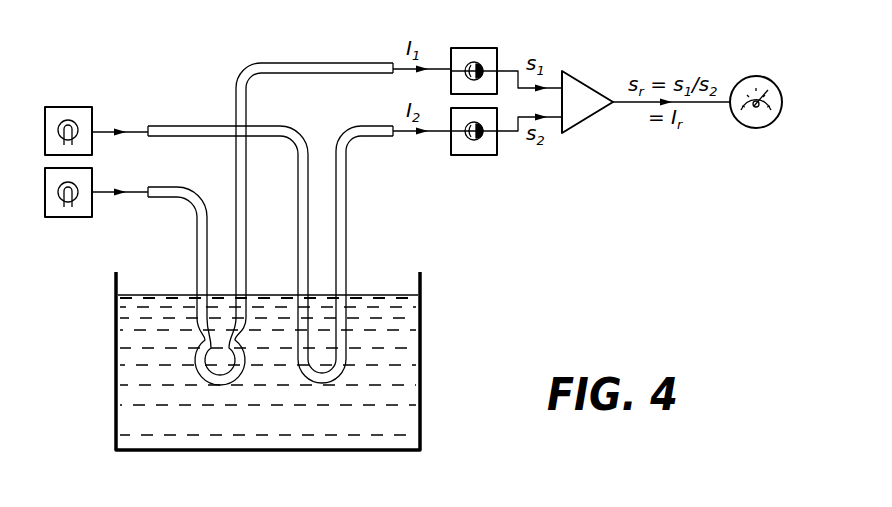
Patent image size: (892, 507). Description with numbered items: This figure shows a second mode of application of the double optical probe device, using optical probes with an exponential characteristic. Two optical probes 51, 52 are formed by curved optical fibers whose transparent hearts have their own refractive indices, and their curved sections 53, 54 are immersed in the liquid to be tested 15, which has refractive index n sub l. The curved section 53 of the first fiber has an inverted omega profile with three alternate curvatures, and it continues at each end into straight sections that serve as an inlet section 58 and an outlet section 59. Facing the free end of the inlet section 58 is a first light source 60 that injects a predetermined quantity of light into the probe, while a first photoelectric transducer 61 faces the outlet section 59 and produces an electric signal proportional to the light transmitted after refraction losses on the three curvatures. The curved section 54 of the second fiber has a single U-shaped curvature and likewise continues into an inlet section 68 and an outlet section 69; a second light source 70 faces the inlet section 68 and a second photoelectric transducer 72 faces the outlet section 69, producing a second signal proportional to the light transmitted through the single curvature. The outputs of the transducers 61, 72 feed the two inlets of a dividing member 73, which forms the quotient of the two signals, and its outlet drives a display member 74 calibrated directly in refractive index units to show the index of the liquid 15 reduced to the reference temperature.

The liquid to be tested 15 is at (128, 424).
The first optical probe 51 is at (223, 228).
The second optical probe 52 is at (308, 258).
The curved section of the first fiber 53 is at (221, 380).
The curved section of the second fiber 54 is at (322, 382).
The inlet section 58 is at (170, 197).
The outlet section 59 is at (330, 64).
The first light source 60 is at (78, 212).
The first photoelectric transducer 61 is at (462, 52).
The inlet section 68 is at (173, 127).
The outlet section 69 is at (384, 137).
The second light source 70 is at (62, 112).
The second photoelectric transducer 72 is at (477, 158).
The dividing member 73 is at (583, 90).
The display member 74 is at (749, 80).